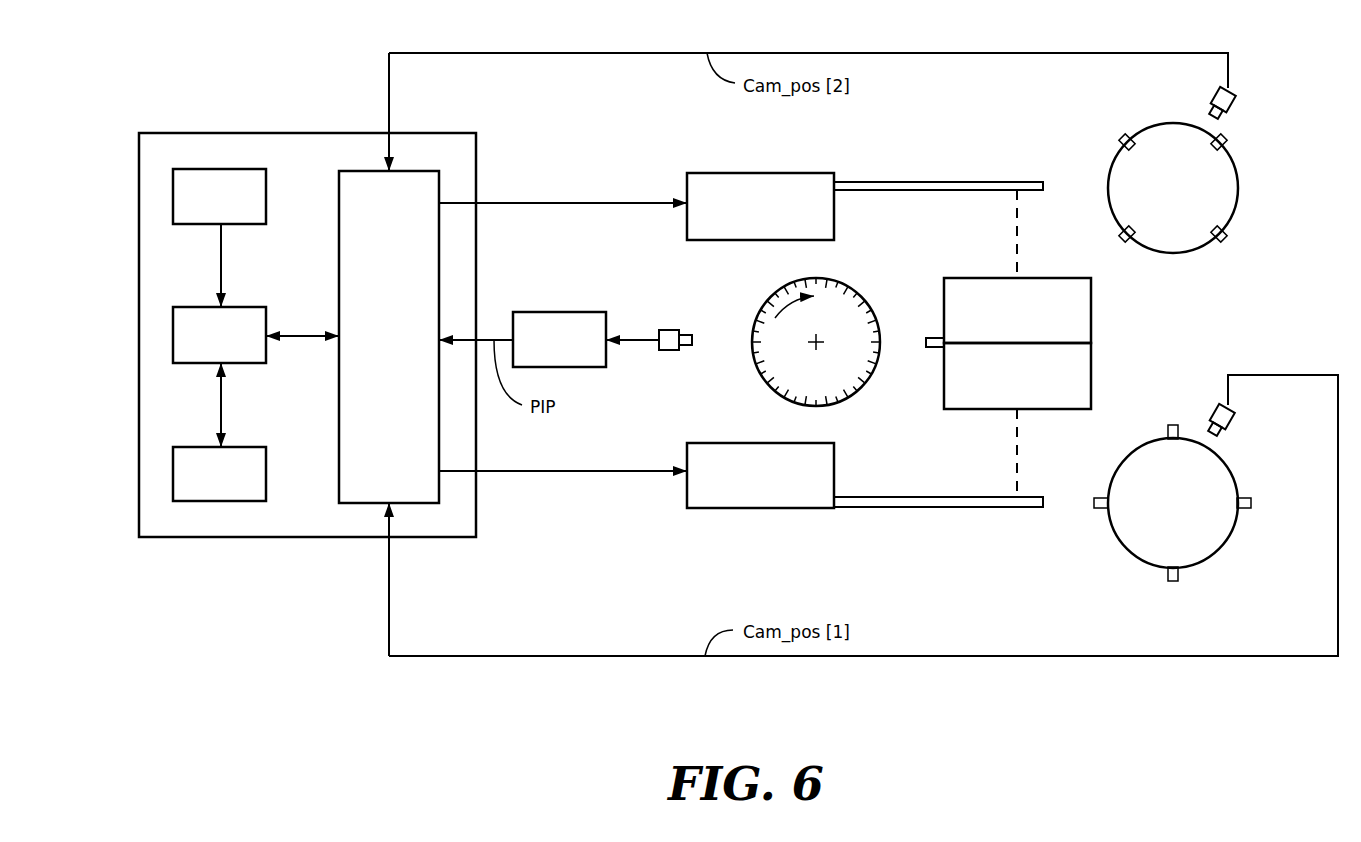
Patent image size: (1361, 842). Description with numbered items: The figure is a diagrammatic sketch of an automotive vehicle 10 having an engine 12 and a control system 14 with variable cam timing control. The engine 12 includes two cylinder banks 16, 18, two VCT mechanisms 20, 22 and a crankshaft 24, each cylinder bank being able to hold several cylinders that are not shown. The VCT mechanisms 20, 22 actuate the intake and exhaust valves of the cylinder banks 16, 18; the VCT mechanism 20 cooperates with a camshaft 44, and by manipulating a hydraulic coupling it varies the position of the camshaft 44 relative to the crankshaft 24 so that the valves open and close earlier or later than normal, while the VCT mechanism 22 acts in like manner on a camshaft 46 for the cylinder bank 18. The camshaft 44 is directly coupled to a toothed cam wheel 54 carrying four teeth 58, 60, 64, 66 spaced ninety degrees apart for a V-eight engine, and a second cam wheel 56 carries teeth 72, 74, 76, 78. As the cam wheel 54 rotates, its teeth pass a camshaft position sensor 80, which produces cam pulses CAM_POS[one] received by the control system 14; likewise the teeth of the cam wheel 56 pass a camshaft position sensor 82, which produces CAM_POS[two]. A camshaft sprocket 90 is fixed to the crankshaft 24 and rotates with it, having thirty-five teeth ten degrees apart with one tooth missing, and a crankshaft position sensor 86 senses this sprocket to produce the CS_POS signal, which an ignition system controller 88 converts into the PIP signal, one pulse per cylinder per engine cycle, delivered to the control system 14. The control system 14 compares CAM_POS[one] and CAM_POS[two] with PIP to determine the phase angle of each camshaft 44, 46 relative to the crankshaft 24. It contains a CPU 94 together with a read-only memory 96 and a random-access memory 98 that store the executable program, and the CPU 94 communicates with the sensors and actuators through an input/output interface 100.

The automotive vehicle 10 is at (1197, 38).
The engine 12 is at (840, 162).
The control system 14 is at (223, 110).
The cylinder bank 16 is at (1093, 372).
The cylinder bank 18 is at (1093, 307).
The VCT mechanism 20 is at (760, 508).
The VCT mechanism 22 is at (760, 173).
The crankshaft 24 is at (936, 348).
The camshaft 44 is at (945, 507).
The camshaft 46 is at (945, 182).
The toothed cam wheel 54 is at (1220, 548).
The cam wheel 56 is at (1238, 178).
The tooth 58 is at (1248, 497).
The tooth 60 is at (1173, 582).
The tooth 64 is at (1100, 508).
The tooth 66 is at (1172, 425).
The tooth 72 is at (1226, 135).
The tooth 74 is at (1226, 241).
The tooth 76 is at (1120, 241).
The tooth 78 is at (1120, 135).
The camshaft position sensor 80 is at (1232, 410).
The camshaft position sensor 82 is at (1232, 95).
The crankshaft position sensor 86 is at (669, 330).
The ignition system controller 88 is at (560, 312).
The camshaft sprocket 90 is at (855, 290).
The CPU 94 is at (255, 307).
The read-only memory (ROM) 96 is at (255, 169).
The random-access memory (RAM) 98 is at (255, 447).
The input/output (I/O) interface 100 is at (339, 250).